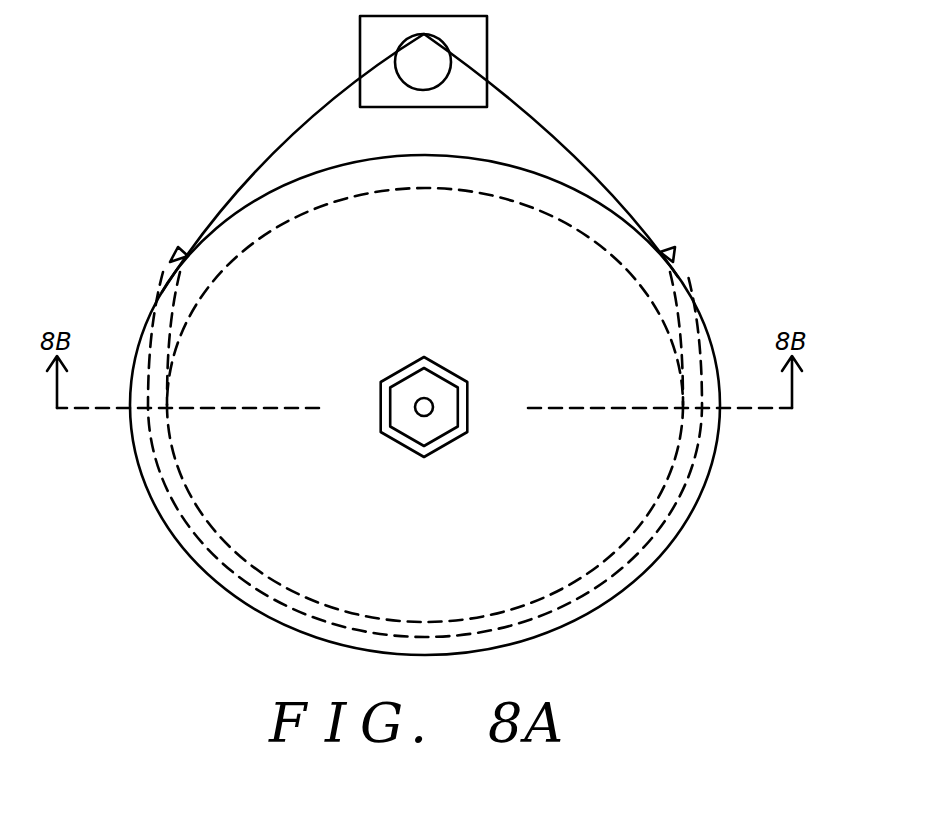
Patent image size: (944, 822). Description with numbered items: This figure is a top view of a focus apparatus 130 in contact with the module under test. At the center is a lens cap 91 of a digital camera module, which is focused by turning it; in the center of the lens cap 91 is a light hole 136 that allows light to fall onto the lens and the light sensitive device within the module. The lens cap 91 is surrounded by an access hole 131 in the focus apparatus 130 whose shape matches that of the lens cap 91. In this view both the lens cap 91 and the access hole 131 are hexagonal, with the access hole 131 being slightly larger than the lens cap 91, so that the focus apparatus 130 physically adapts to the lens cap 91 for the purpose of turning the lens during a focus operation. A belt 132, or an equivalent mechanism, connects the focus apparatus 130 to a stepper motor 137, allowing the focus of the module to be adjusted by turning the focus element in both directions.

The focus apparatus 130 is at (682, 535).
The belt 132 is at (167, 265).
The stepper motor 137 is at (487, 38).
The access hole 131 is at (407, 448).
The lens cap 91 is at (452, 373).
The light hole 136 is at (416, 405).